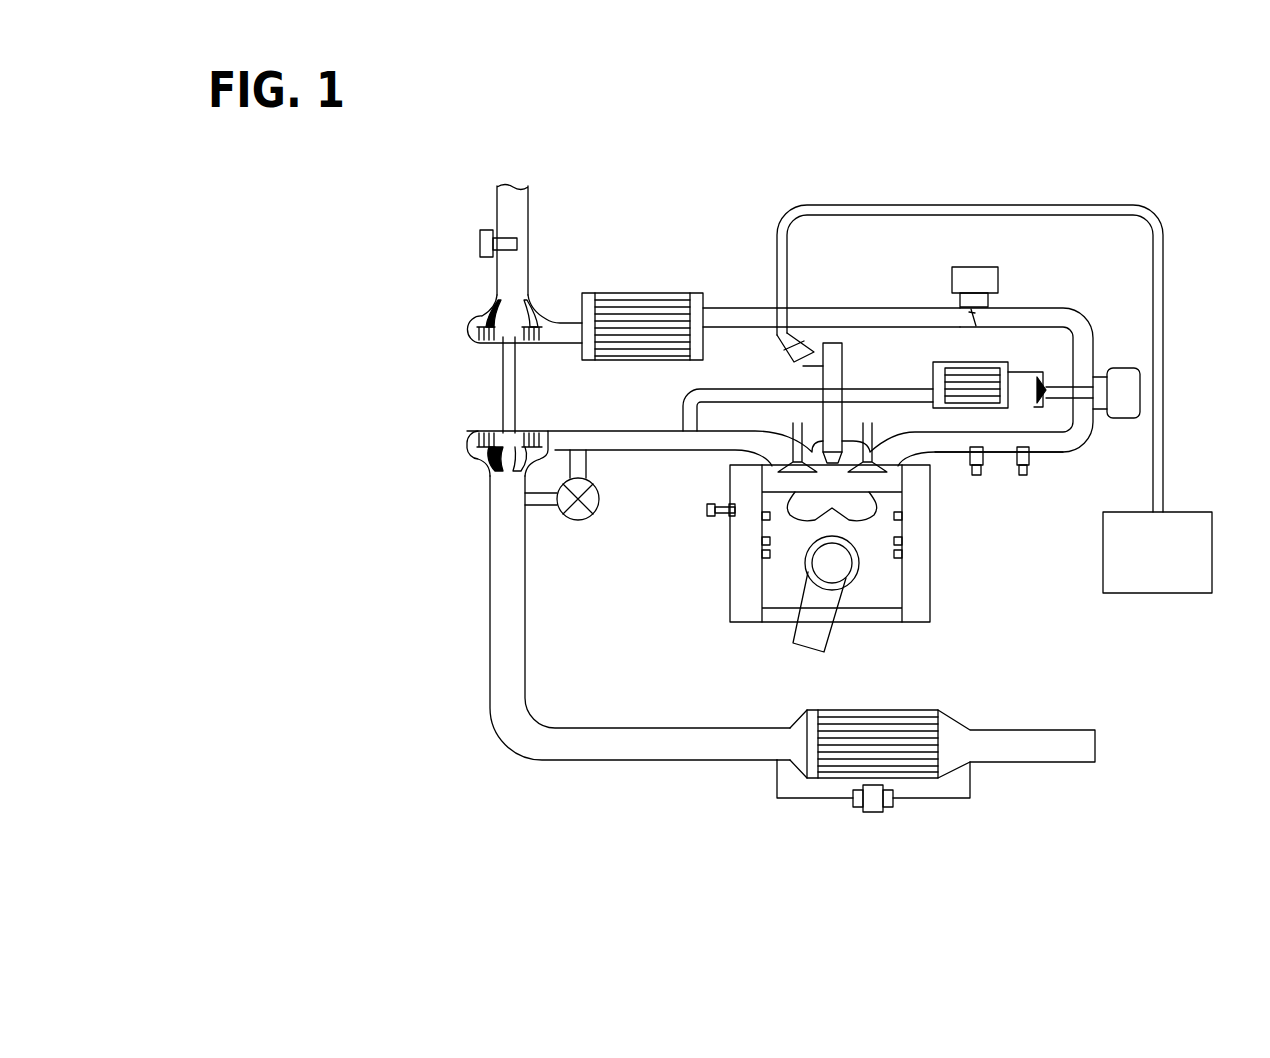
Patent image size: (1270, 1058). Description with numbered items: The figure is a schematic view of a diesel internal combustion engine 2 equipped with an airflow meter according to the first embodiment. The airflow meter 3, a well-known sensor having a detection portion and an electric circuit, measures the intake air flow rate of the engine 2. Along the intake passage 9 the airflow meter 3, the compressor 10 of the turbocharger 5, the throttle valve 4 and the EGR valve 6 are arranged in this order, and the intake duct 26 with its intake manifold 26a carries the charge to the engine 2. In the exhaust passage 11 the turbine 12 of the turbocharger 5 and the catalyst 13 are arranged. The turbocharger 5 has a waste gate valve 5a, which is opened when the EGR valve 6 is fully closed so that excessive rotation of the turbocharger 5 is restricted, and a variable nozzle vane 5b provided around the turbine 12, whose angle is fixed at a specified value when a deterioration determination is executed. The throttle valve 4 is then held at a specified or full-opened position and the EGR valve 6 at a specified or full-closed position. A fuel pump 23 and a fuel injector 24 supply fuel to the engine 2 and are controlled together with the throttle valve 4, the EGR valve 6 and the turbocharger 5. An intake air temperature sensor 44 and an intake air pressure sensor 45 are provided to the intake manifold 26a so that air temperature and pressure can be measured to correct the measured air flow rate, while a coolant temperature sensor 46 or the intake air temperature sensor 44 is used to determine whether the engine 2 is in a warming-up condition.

The internal combustion engine 2 is at (718, 606).
The airflow meter (AFM) 3 is at (503, 236).
The throttle valve 4 is at (979, 314).
The turbocharger 5 is at (603, 504).
The waste gate valve 5a is at (582, 516).
The variable nozzle vane 5b is at (478, 459).
The EGR valve 6 is at (1043, 406).
The intake passage 9 is at (1092, 306).
The compressor 10 is at (533, 327).
The exhaust passage 11 is at (607, 771).
The turbine 12 is at (513, 464).
The catalyst 13 is at (913, 726).
The fuel pump 23 is at (1200, 553).
The fuel injector 24 is at (834, 414).
The intake duct 26 is at (738, 303).
The intake manifold 26a is at (996, 455).
The intake air temperature sensor 44 is at (1025, 478).
The intake air pressure sensor 45 is at (976, 478).
The coolant temperature sensor 46 is at (716, 519).